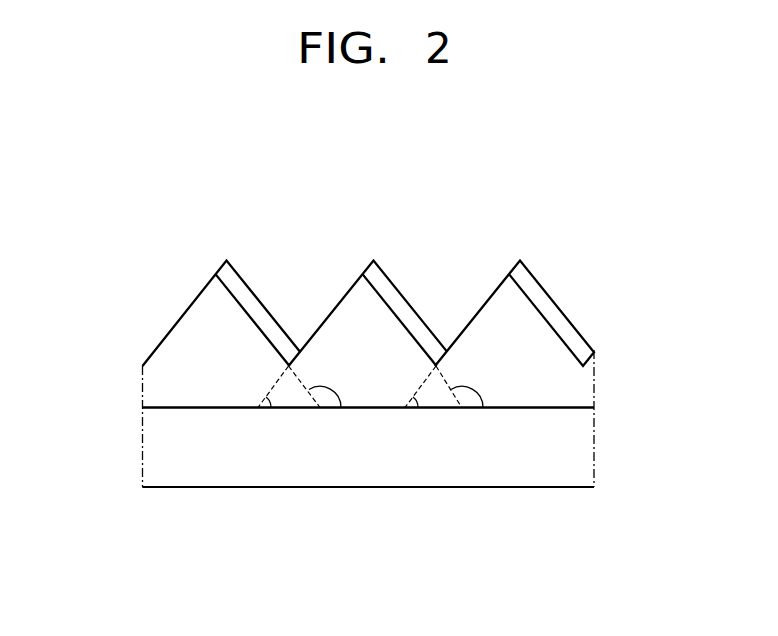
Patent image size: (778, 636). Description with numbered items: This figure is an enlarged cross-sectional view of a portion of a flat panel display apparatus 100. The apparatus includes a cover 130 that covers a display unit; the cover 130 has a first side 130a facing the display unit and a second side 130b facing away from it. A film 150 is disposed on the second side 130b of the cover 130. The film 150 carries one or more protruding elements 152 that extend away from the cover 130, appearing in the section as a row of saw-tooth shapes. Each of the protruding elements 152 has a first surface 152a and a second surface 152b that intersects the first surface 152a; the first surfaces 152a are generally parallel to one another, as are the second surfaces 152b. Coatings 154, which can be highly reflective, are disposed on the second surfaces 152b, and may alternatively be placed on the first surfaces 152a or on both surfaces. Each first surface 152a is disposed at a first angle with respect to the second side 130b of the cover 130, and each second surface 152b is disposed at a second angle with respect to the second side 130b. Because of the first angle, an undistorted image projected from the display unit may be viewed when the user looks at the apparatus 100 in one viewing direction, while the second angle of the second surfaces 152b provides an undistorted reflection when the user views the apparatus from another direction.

The flat panel display apparatus 100 is at (410, 587).
The cover 130 is at (582, 448).
The first side 130a is at (183, 487).
The second side 130b is at (183, 408).
The film 150 is at (582, 386).
The protruding elements 152 is at (236, 324).
The first surfaces 152a is at (347, 291).
The second surfaces 152b is at (385, 300).
The coatings 154 is at (540, 292).